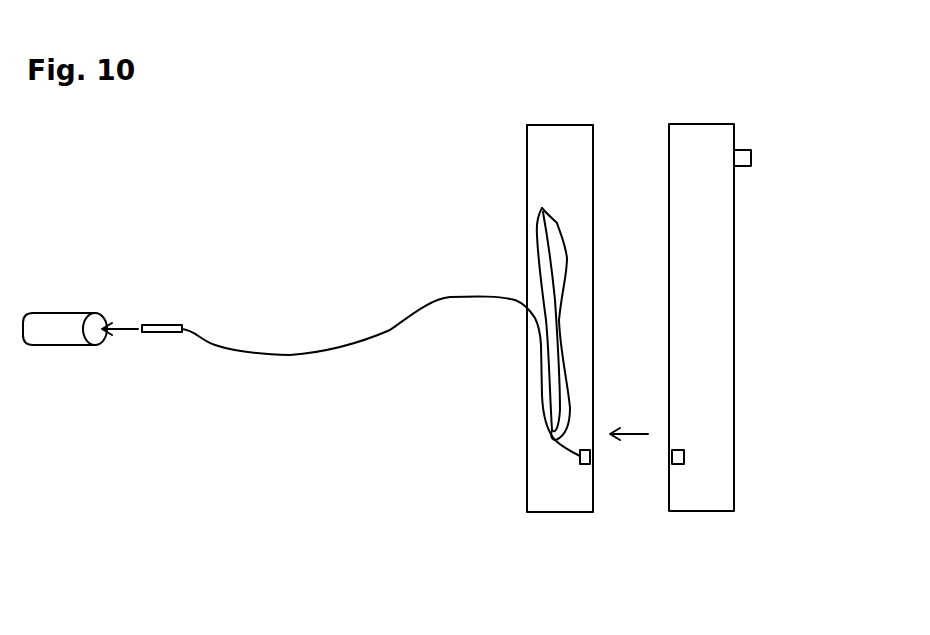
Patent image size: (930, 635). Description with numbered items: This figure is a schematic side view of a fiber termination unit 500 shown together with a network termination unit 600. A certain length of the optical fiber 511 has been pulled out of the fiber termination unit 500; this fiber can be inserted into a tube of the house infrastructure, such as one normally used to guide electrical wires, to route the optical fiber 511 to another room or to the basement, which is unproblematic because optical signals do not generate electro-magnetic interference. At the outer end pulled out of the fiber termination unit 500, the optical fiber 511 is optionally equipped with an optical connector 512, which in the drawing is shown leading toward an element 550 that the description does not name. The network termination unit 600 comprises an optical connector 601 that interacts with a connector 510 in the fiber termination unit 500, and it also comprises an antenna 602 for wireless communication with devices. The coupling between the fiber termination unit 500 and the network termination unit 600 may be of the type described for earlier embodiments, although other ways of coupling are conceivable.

The fiber termination unit 500 is at (568, 512).
The connector 510 is at (590, 464).
The optical fiber 511 is at (302, 358).
The optical connector 512 is at (158, 325).
The power source 550 is at (55, 312).
The network termination unit 600 is at (705, 512).
The optical connector 601 is at (680, 450).
The antenna 602 is at (745, 150).